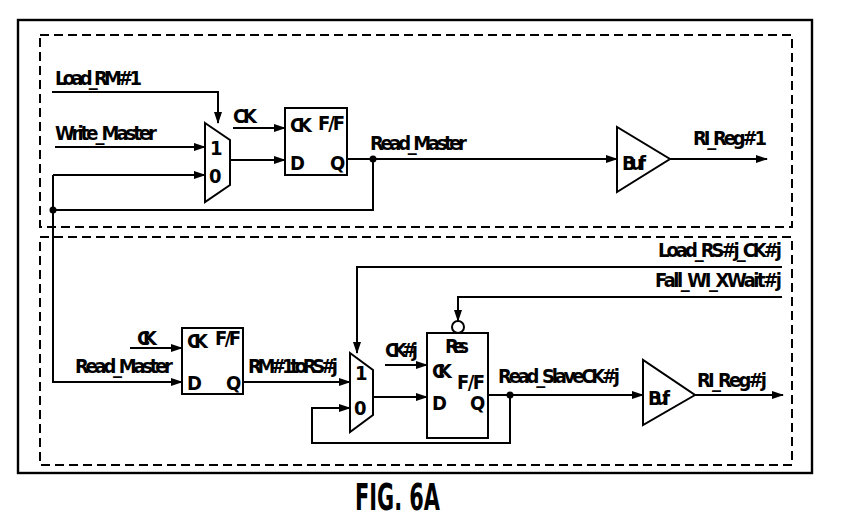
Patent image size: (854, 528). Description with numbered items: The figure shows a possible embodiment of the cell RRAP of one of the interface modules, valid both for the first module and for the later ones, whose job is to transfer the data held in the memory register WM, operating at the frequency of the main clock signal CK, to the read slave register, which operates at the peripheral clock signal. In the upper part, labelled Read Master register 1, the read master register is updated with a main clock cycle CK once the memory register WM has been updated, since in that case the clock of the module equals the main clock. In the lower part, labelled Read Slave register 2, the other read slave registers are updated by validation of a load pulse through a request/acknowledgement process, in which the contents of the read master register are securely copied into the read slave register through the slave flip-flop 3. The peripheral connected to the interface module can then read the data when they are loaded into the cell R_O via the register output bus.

The Read Master register # 1 is at (416, 131).
The Read Slave register #j 2 is at (416, 351).
The RSR#j flip-flop 3 is at (457, 385).